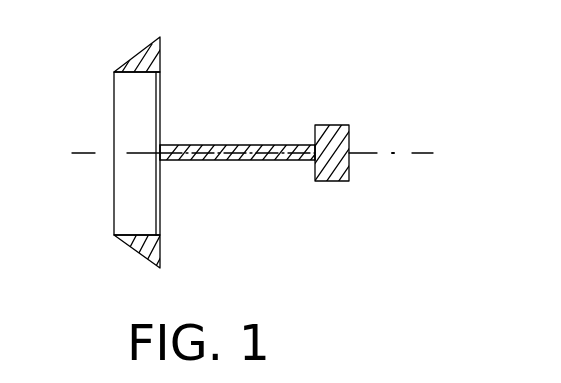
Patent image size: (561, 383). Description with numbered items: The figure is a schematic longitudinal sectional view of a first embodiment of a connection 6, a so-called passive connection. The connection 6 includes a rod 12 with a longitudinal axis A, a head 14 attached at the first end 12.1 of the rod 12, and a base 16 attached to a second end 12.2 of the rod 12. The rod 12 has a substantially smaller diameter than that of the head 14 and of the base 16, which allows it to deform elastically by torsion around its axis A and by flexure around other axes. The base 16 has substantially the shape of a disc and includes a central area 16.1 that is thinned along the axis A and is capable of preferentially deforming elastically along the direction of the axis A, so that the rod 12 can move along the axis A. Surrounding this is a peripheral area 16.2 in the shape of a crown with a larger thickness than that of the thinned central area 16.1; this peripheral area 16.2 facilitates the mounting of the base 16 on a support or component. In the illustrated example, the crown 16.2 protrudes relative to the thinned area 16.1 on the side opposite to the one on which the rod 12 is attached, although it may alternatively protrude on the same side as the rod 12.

The connection 6 is at (260, 82).
The rod 12 is at (243, 162).
The first end of the rod 12.1 is at (293, 162).
The second end of the rod 12.2 is at (162, 161).
The head 14 is at (332, 132).
The base 16 is at (130, 257).
The central area 16.1 is at (162, 120).
The peripheral area 16.2 is at (140, 52).
The longitudinal axis A is at (420, 152).